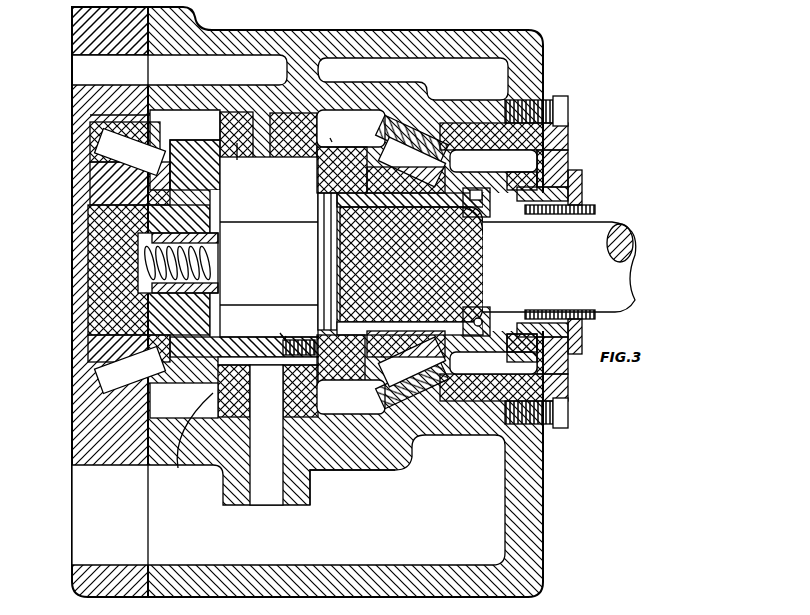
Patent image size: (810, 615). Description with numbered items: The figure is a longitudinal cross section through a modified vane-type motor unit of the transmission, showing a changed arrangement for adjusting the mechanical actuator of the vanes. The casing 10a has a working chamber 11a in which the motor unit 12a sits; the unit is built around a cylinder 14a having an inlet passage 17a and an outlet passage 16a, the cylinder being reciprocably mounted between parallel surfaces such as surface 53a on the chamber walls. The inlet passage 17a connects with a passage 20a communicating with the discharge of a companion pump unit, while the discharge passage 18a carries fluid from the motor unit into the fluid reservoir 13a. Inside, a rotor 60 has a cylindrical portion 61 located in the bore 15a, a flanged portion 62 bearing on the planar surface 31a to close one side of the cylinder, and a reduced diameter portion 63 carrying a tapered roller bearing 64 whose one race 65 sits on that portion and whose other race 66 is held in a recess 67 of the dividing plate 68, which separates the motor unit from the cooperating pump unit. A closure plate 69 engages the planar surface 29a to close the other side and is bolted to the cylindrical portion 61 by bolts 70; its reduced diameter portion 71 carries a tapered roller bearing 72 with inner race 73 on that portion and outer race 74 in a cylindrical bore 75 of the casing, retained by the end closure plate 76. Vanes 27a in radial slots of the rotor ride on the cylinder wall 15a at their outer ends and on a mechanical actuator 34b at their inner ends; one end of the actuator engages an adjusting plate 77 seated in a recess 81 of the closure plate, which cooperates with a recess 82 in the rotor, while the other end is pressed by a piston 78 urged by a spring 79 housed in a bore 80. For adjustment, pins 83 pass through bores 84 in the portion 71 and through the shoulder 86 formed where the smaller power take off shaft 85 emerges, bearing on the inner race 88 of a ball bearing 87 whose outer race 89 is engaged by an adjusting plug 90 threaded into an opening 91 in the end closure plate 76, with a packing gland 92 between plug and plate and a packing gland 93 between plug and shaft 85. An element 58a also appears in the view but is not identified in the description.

The casing 10a is at (545, 57).
The fluid reservoir 13a is at (544, 527).
The discharge passage 18a is at (311, 487).
The passage 20a is at (195, 70).
The reduced diameter portion 63 is at (88, 228).
The dividing plate 68 is at (80, 22).
The recess 67 is at (110, 120).
The race 66 is at (90, 136).
The tapered roller bearing 64 is at (97, 158).
The race 65 is at (100, 181).
The motor unit 12a is at (216, 138).
The bore 15a is at (249, 136).
The inlet passage 17a is at (286, 126).
The cylinder 14a is at (241, 163).
The vanes 27a is at (269, 247).
The bore 80 is at (248, 213).
The spring 79 is at (210, 262).
The piston 78 is at (218, 288).
The mechanical actuator 34b is at (299, 293).
The pins 83 is at (318, 195).
The bores 84 is at (337, 200).
The adjusting plate 77 is at (340, 230).
The shoulder 86 is at (486, 232).
The power take off shaft 85 is at (607, 232).
The cylindrical portion 61 is at (238, 340).
The recess 82 is at (254, 336).
The rotor 60 is at (275, 330).
The recess 81 is at (310, 338).
The planar surface 29a is at (268, 435).
The outlet passage 16a is at (218, 398).
The flanged portion 62 is at (175, 380).
The planar surface 31a is at (187, 441).
The parallel surface 53a is at (315, 405).
The recess 58a is at (318, 122).
The closure plate 69 is at (329, 133).
The working chamber 11a is at (352, 133).
The tapered roller bearing 72 is at (425, 160).
The reduced diameter portion 71 is at (411, 162).
The inner race 73 is at (440, 183).
The bolts 70 is at (366, 368).
The outer race 74 is at (440, 125).
The cylindrical bore 75 is at (520, 110).
The end closure plate 76 is at (556, 145).
The threaded opening 91 is at (555, 165).
The packing gland 92 is at (582, 172).
The adjusting plug 90 is at (568, 194).
The packing gland 93 is at (595, 208).
The ball bearing 87 is at (478, 185).
The inner race 88 is at (475, 335).
The outer race 89 is at (510, 345).